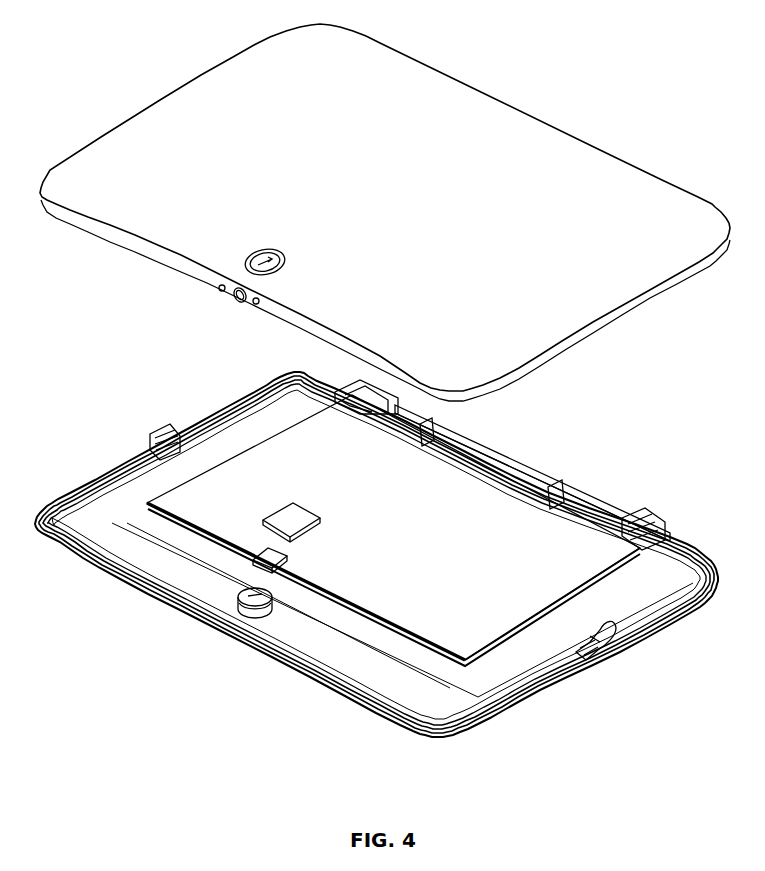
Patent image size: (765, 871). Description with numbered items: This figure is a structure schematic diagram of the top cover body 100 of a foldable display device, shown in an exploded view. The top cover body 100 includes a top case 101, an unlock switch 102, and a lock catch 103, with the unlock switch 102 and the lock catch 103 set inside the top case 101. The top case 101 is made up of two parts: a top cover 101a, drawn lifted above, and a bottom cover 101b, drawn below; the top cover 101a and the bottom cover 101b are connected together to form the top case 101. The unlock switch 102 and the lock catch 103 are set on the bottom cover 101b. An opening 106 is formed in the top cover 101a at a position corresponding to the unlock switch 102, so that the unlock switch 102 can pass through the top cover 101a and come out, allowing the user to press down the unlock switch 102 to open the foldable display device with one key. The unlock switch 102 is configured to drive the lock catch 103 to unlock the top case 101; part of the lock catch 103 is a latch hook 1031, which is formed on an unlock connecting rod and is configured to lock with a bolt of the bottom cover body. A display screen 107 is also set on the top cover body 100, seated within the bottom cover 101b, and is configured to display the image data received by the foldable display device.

The top cover body 100 is at (635, 128).
The top case 101 is at (671, 345).
The top cover 101a is at (543, 313).
The bottom cover 101b is at (520, 493).
The unlock switch 102 is at (240, 596).
The lock catch 103 is at (353, 647).
The latch hook 1031 is at (612, 640).
The opening 106 is at (247, 262).
The display screen 107 is at (280, 440).